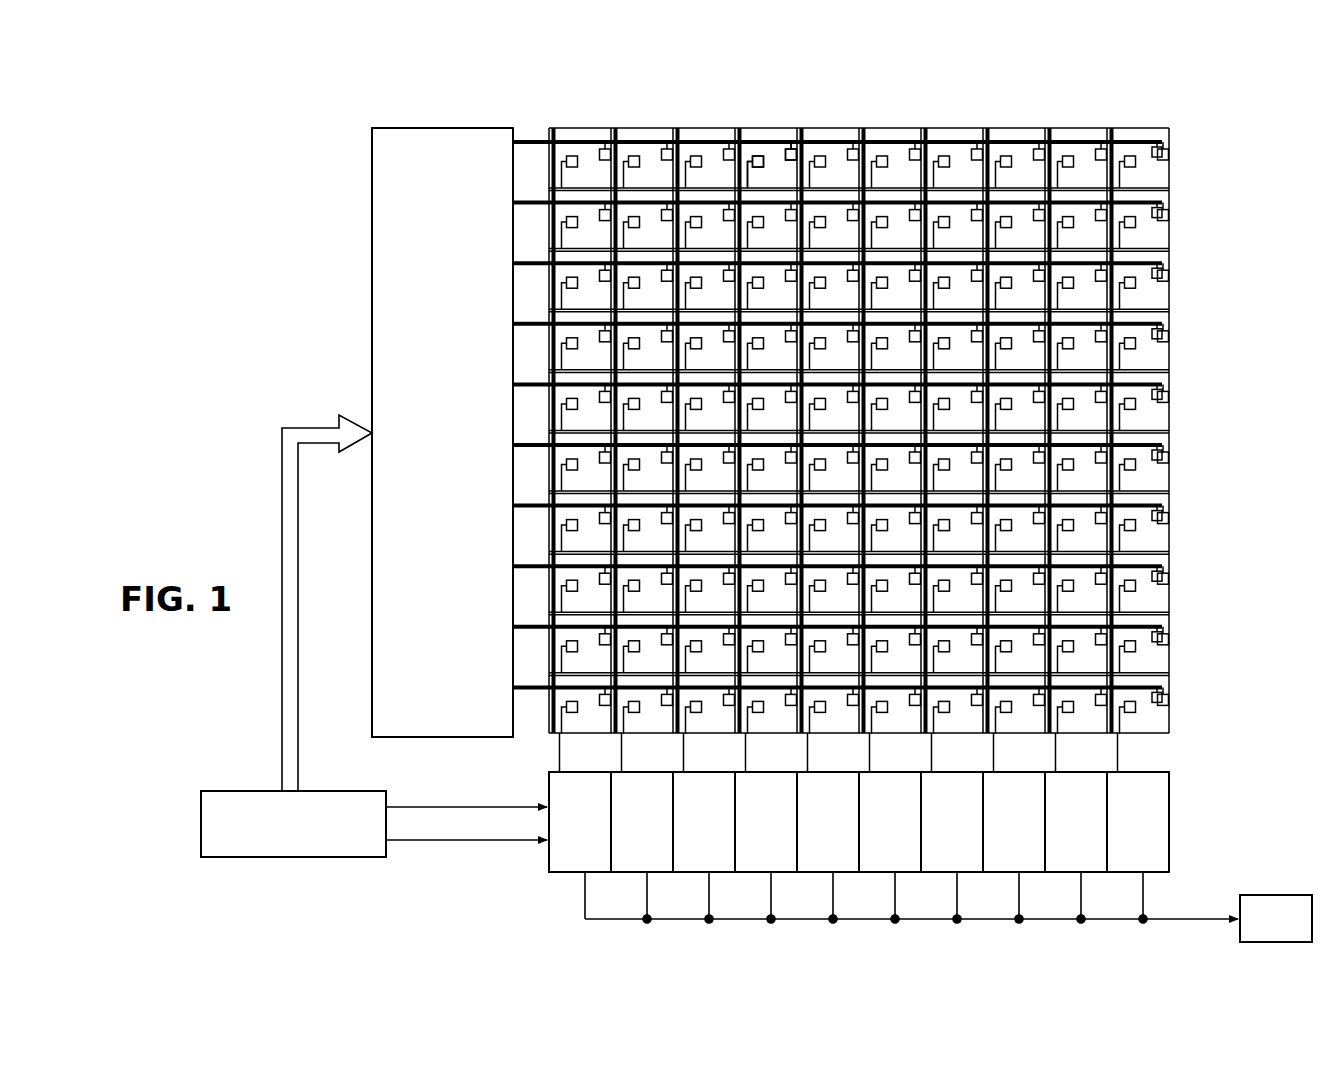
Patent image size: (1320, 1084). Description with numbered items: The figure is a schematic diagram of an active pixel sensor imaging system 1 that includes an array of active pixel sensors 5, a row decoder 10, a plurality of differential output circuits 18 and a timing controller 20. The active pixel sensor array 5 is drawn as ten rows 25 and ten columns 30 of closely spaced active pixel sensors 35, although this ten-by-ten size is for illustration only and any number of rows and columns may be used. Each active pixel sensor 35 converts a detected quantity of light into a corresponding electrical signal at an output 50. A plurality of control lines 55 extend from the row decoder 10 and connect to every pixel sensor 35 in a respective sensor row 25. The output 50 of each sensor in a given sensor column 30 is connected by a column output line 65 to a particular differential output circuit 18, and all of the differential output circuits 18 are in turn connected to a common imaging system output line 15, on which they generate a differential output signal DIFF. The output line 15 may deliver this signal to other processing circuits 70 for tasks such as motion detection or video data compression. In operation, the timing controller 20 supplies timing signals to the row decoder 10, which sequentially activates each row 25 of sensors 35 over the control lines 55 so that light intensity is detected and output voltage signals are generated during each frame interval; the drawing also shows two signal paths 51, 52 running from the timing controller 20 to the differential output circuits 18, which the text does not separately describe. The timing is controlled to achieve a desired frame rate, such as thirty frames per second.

The active pixel sensor imaging system 1 is at (300, 110).
The array of active pixel sensors 5 is at (897, 414).
The row decoder 10 is at (372, 202).
The common imaging system output line 15 is at (1200, 918).
The differential output circuit 18 is at (594, 836).
The timing controller 20 is at (201, 823).
The sensor row 25 is at (1192, 462).
The sensor column 30 is at (895, 104).
The active pixel sensor 35 is at (1152, 126).
The output 50 is at (923, 412).
The first control signal 51 is at (440, 805).
The second control signal 52 is at (456, 842).
The control lines 55 is at (1015, 139).
The column output line 65 is at (748, 178).
The other processing circuits 70 is at (1273, 895).